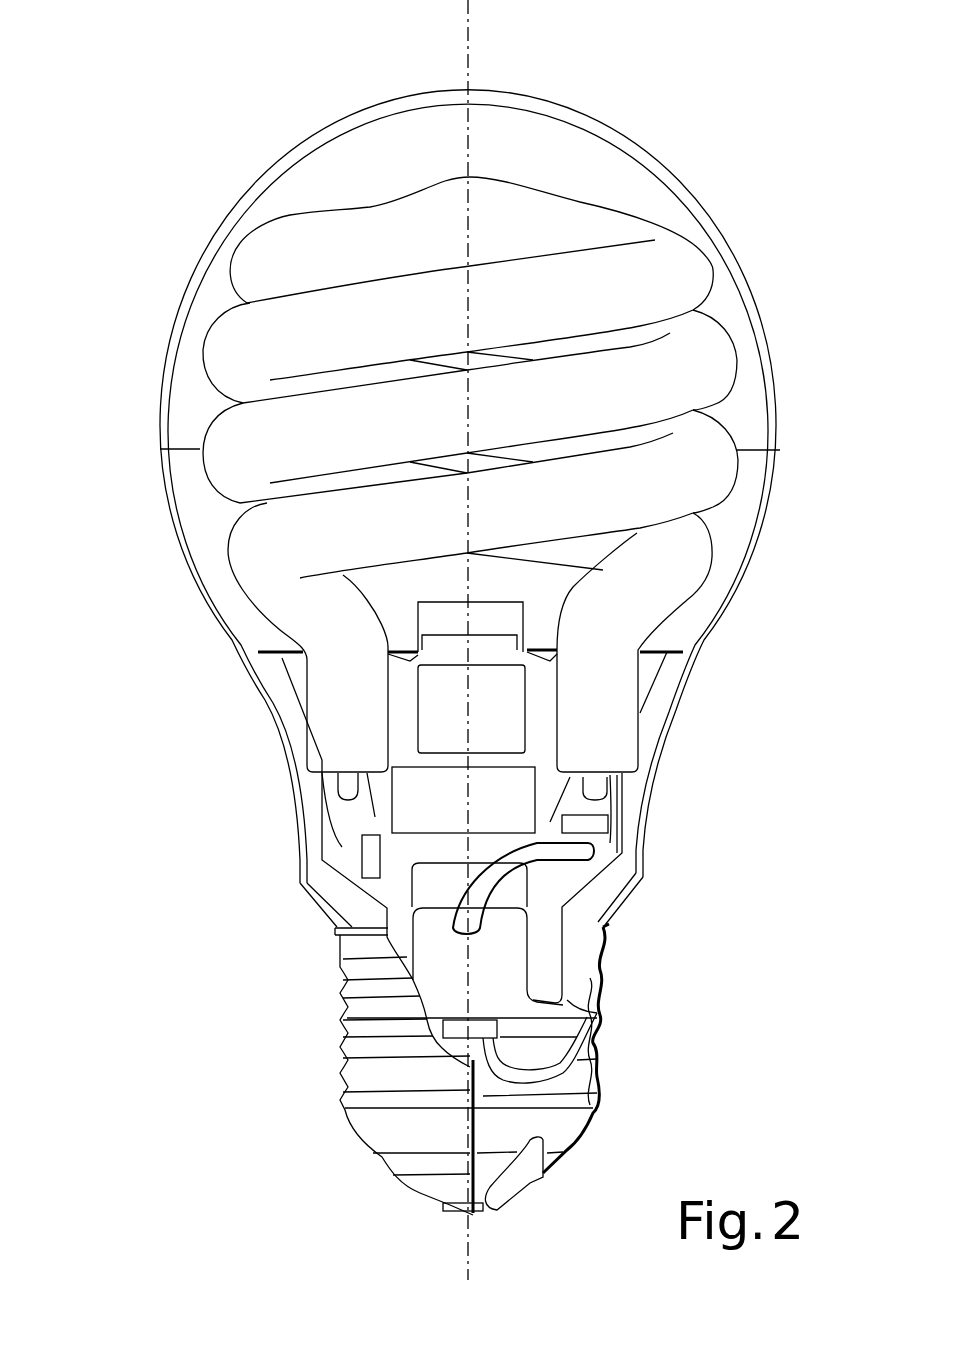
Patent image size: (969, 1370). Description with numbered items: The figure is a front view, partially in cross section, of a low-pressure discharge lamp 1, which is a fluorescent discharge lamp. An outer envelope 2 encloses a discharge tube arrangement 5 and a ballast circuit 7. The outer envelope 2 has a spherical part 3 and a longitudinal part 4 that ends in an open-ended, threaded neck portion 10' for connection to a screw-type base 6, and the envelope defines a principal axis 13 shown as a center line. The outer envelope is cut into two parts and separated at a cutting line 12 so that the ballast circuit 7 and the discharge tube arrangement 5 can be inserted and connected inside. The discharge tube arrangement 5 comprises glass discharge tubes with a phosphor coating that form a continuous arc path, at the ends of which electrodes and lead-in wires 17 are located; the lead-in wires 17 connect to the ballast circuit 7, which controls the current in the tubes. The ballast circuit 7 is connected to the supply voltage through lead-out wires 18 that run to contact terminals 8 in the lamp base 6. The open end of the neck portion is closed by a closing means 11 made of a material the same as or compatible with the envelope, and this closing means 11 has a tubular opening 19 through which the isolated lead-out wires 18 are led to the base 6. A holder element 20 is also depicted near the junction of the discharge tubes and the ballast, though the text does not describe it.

The low-pressure discharge lamp 1 is at (213, 146).
The outer envelope 2 is at (717, 222).
The spherical part 3 is at (168, 336).
The longitudinal part 4 is at (293, 830).
The discharge tube arrangement 5 is at (725, 360).
The base 6 is at (367, 1070).
The ballast circuit 7 is at (487, 728).
The contact terminals 8 is at (606, 927).
The threaded neck portion 10' is at (676, 1035).
The closing means 11 is at (447, 958).
The cutting line 12 is at (200, 451).
The principal axis 13 is at (467, 78).
The lead-in wires 17 is at (618, 798).
The lead-out wires 18 is at (580, 1040).
The tubular opening 19 is at (523, 920).
The holder plate 20 is at (683, 645).